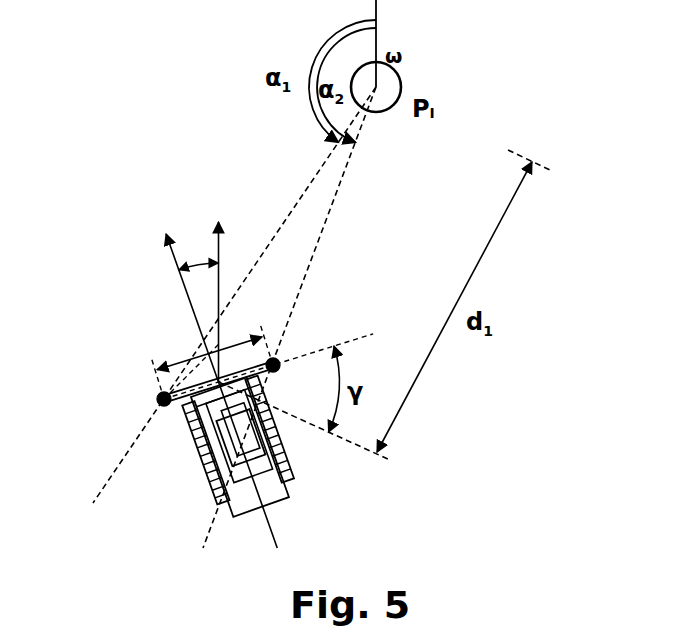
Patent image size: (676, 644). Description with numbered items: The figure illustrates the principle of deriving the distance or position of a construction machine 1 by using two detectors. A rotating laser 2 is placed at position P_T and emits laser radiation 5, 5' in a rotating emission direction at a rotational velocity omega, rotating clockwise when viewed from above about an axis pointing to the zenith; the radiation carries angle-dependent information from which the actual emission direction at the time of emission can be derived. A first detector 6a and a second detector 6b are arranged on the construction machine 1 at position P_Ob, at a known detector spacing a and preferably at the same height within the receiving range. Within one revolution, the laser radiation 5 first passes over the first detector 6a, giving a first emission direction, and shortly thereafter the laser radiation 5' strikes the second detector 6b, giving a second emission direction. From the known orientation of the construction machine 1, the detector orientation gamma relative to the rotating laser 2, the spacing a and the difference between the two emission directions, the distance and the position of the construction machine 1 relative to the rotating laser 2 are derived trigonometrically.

The construction machine 1 is at (145, 313).
The rotating laser 2 is at (391, 89).
The laser radiation 5 is at (234, 295).
The laser radiation 5' is at (299, 317).
The first detector 6a is at (158, 397).
The second detector 6b is at (278, 360).